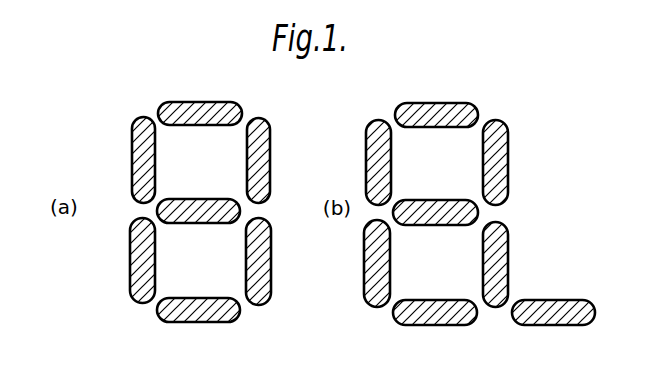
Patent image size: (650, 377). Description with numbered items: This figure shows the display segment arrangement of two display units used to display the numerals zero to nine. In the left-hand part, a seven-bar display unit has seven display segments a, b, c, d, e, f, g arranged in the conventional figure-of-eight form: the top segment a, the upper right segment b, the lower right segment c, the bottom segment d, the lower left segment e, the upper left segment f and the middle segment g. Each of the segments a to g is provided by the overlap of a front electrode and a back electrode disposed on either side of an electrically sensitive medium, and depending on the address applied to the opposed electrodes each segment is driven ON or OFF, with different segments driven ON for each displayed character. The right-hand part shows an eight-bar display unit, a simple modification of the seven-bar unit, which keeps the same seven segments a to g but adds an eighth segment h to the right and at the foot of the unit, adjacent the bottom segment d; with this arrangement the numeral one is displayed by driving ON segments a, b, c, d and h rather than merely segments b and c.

The display segment a is at (190, 113).
The display segment b is at (262, 150).
The display segment c is at (257, 252).
The display segment d is at (188, 307).
The display segment e is at (140, 245).
The display segment f is at (140, 150).
The display segment g is at (202, 212).
The eighth display segment h is at (557, 317).